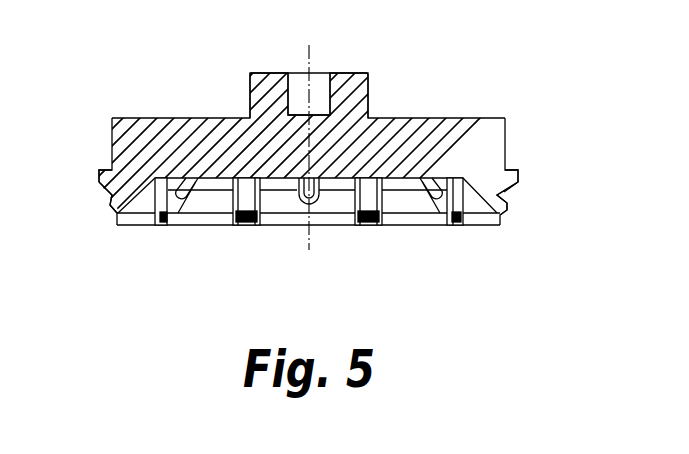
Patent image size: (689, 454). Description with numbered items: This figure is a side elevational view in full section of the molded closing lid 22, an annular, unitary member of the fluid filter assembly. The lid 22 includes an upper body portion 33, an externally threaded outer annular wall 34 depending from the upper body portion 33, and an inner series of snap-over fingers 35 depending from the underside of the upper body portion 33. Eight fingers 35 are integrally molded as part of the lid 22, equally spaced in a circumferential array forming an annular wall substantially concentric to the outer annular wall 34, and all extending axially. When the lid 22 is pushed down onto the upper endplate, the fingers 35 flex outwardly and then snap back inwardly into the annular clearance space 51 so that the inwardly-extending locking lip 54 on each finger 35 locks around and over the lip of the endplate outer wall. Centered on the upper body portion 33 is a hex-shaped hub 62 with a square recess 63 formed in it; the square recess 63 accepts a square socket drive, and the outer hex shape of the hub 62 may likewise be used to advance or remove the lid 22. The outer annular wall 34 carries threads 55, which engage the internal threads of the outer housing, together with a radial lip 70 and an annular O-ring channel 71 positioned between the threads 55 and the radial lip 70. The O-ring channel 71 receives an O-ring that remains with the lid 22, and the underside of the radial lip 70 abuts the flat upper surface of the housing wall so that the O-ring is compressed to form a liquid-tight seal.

The closing lid 22 is at (510, 298).
The upper body portion 33 is at (400, 118).
The outer annular wall 34 is at (505, 212).
The snap-over fingers 35 is at (120, 216).
The annular clearance space 51 is at (482, 232).
The locking lip 54 is at (168, 212).
The threads 55 is at (108, 212).
The hex-shaped hub 62 is at (250, 104).
The square recess 63 is at (318, 88).
The radial lip 70 is at (100, 176).
The O-ring channel 71 is at (519, 194).